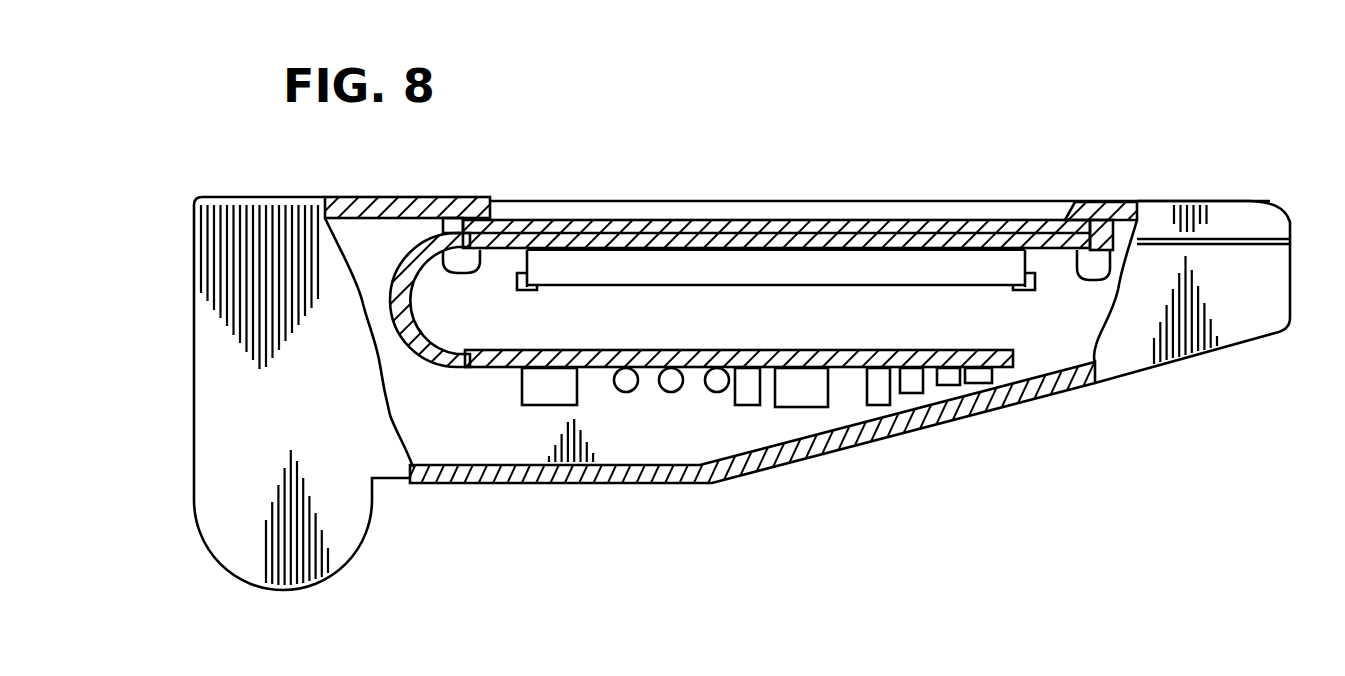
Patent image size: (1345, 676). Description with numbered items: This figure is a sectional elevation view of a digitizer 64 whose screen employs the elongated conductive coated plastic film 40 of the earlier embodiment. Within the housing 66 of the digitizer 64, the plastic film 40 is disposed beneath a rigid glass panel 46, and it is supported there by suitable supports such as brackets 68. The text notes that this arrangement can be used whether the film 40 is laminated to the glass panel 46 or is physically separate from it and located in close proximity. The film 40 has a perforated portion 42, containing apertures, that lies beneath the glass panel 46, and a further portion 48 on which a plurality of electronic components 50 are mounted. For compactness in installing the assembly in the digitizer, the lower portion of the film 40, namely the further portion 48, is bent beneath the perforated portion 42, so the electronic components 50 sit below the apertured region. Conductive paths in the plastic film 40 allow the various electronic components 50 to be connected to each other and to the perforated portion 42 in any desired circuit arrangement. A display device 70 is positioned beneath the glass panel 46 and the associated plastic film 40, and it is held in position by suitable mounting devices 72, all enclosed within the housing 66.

The digitizer 64 is at (1251, 203).
The housing 66 is at (1043, 393).
The glass panel 46 is at (887, 222).
The conductive coated plastic film 40 is at (440, 352).
The perforated portion 42 is at (722, 250).
The display device 70 is at (812, 268).
The mounting devices 72 is at (537, 291).
The brackets 68 is at (470, 274).
The further portion 48 is at (591, 368).
The electronic components 50 is at (710, 392).